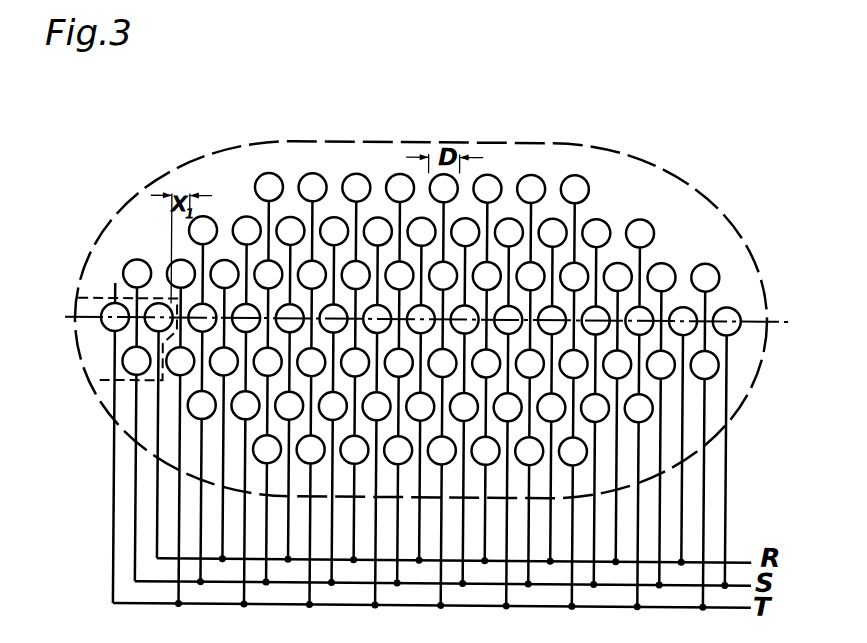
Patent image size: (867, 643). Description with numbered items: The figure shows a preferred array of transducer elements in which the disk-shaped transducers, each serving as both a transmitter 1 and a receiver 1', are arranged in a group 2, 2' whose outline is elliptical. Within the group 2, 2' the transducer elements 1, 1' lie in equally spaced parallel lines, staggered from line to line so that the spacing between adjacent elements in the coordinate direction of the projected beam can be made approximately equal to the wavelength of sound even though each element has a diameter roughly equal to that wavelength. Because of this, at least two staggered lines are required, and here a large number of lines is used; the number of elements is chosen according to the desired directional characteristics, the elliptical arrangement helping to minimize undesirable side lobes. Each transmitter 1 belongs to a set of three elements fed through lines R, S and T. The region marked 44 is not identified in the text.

The transmitter 1 is at (422, 200).
The receiver 1' is at (420, 407).
The group 2 is at (422, 213).
The group 2' is at (420, 408).
The electrode group 44 is at (92, 342).